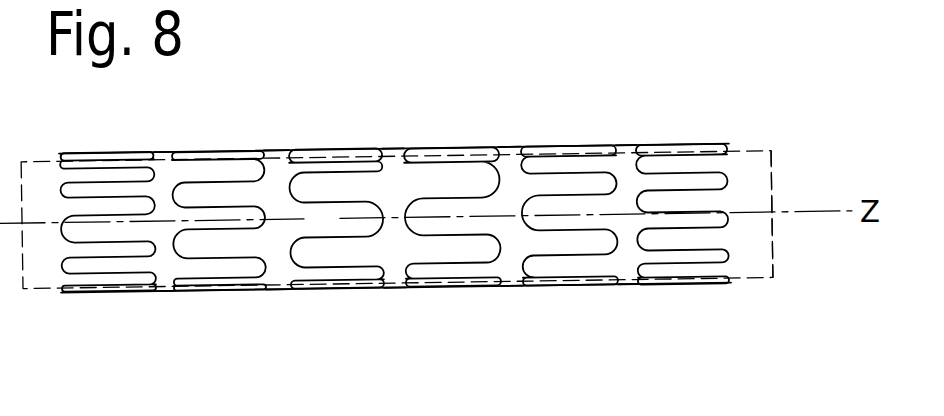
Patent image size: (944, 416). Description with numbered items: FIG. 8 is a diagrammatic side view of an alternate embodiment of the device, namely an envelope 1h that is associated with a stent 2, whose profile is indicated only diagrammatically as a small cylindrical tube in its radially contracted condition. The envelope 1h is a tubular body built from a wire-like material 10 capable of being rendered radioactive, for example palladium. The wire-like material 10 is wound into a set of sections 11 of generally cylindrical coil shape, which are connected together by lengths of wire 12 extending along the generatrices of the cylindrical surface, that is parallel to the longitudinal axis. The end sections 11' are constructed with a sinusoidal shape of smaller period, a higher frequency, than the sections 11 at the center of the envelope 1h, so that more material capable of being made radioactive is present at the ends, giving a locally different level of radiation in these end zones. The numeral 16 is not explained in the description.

The wire-like material 10 is at (511, 144).
The sections 11 is at (395, 218).
The end sections 11' is at (394, 184).
The lengths of wire 12 is at (477, 148).
The envelope 1h is at (416, 199).
The stent 2 is at (761, 287).
The lumen 16 is at (442, 6).